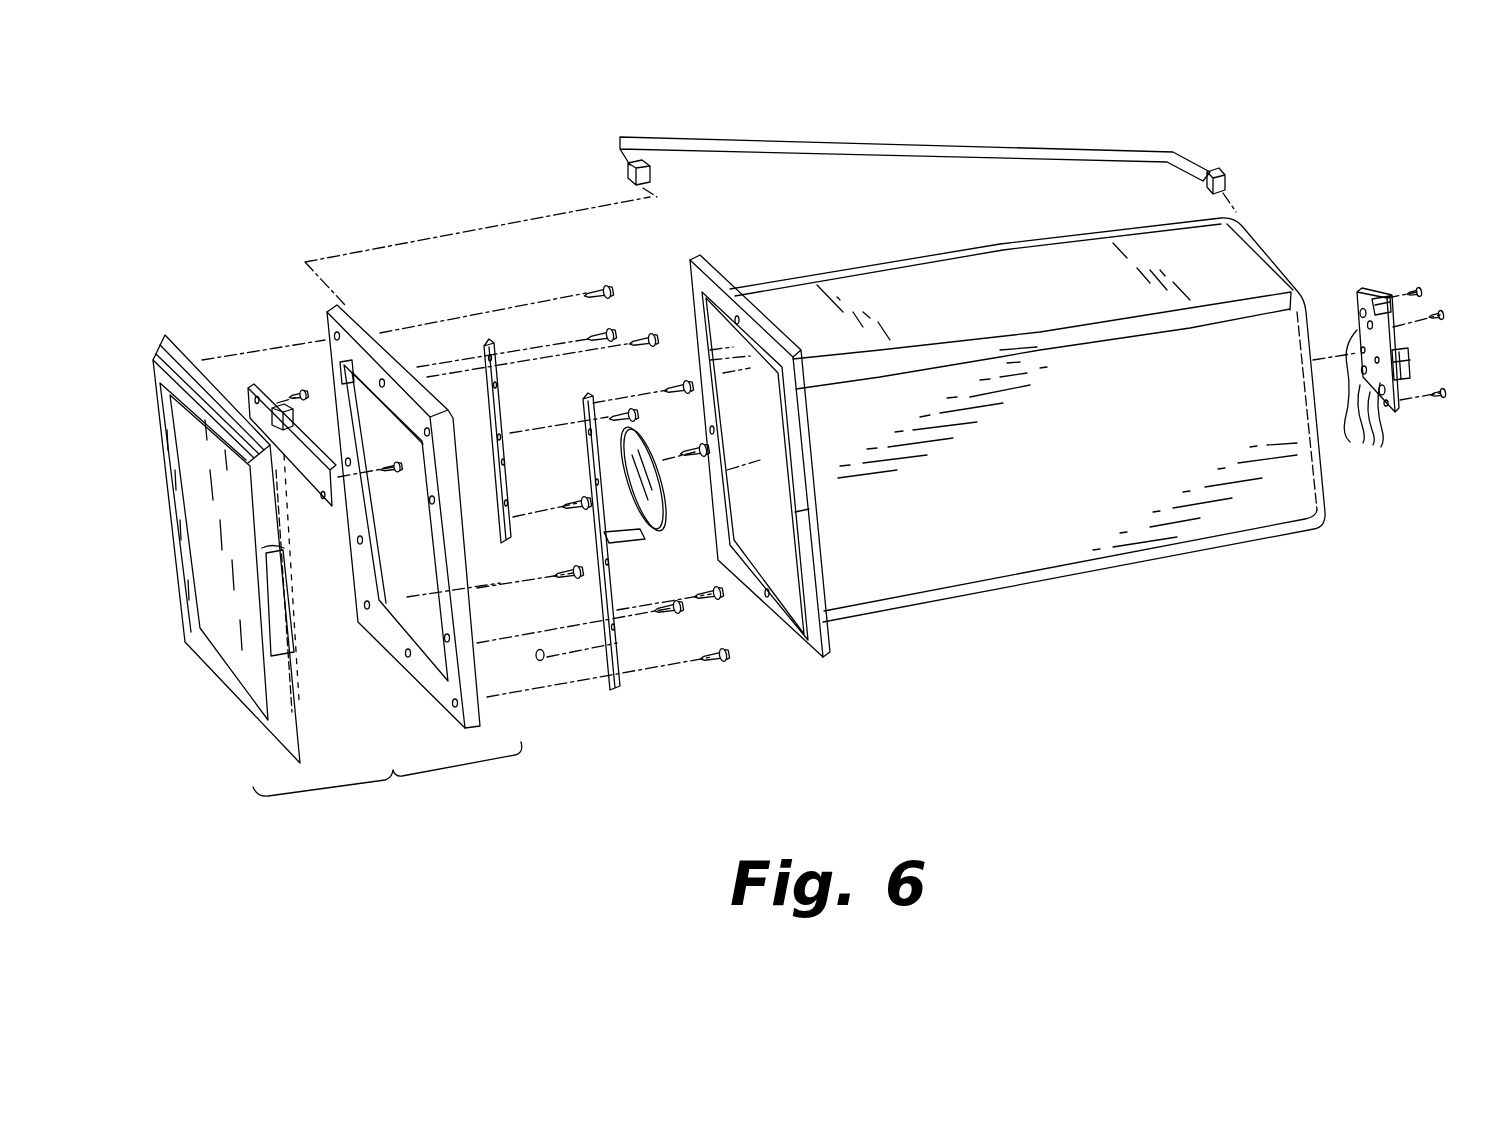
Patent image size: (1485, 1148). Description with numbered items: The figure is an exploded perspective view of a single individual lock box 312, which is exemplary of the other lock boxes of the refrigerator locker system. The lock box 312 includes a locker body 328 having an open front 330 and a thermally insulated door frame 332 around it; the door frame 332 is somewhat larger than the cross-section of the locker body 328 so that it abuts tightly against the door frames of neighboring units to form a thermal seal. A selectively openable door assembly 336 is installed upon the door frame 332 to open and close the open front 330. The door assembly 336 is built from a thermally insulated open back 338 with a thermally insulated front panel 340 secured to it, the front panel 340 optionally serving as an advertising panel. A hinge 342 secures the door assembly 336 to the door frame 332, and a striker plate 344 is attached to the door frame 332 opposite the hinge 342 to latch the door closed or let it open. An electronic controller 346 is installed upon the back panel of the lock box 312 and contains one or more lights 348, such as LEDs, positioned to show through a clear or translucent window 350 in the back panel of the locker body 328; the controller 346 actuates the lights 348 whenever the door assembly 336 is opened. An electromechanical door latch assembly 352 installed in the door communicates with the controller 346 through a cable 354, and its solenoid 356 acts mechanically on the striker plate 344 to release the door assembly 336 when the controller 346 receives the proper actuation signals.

The lock box 312 is at (1185, 676).
The locker body 328 is at (1076, 467).
The open front 330 is at (775, 603).
The door frame 332 is at (820, 585).
The door assembly 336 is at (387, 786).
The open back 338 is at (387, 652).
The front panel 340 is at (224, 645).
The hinge 342 is at (504, 399).
The striker plate 344 is at (618, 687).
The electronic controller 346 is at (1365, 297).
The lights 348 is at (1360, 406).
The window 350 is at (664, 512).
The door latch assembly 352 is at (250, 377).
The cable 354 is at (870, 142).
The solenoid 356 is at (282, 402).